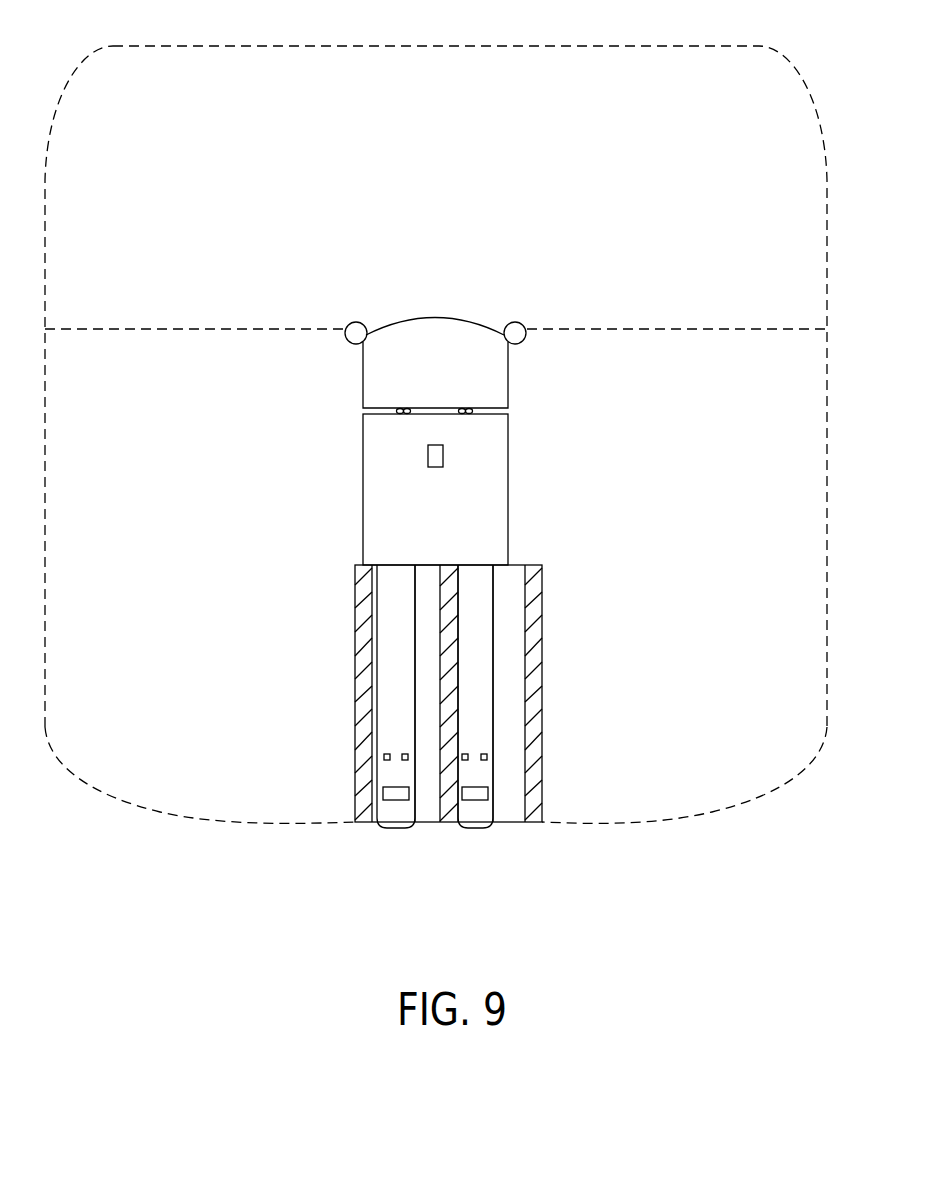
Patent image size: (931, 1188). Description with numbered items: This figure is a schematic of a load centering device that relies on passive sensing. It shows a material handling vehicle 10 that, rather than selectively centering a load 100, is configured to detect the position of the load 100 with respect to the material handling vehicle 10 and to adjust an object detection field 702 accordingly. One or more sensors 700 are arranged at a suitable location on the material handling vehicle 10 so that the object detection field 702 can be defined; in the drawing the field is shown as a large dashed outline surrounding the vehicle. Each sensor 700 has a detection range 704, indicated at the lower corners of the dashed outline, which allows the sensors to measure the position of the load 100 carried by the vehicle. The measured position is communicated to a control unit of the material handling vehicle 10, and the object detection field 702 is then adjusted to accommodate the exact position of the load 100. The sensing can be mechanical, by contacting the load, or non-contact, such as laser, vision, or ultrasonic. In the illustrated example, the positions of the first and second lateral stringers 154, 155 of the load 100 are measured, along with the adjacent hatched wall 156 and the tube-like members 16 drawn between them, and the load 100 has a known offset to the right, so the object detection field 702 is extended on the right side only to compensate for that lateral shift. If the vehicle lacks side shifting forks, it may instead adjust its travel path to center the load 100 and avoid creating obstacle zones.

The material handling vehicle 10 is at (472, 593).
The tubes 16 is at (423, 604).
The load 100 is at (472, 694).
The first lateral stringer 154 is at (360, 825).
The second lateral stringer 155 is at (532, 825).
The middle wall 156 is at (448, 565).
The sensor 700 is at (515, 322).
The object detection field 702 is at (672, 68).
The detection range 704 is at (161, 827).